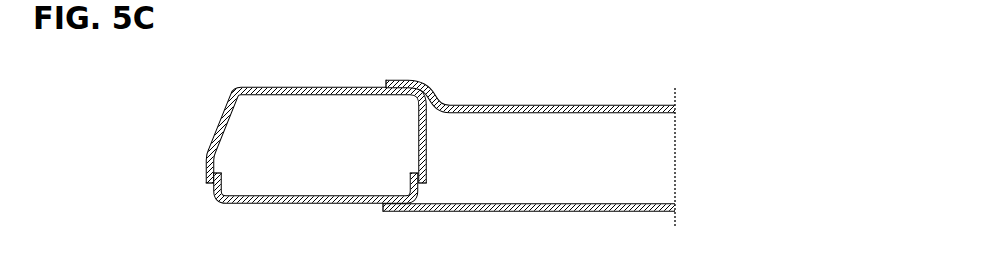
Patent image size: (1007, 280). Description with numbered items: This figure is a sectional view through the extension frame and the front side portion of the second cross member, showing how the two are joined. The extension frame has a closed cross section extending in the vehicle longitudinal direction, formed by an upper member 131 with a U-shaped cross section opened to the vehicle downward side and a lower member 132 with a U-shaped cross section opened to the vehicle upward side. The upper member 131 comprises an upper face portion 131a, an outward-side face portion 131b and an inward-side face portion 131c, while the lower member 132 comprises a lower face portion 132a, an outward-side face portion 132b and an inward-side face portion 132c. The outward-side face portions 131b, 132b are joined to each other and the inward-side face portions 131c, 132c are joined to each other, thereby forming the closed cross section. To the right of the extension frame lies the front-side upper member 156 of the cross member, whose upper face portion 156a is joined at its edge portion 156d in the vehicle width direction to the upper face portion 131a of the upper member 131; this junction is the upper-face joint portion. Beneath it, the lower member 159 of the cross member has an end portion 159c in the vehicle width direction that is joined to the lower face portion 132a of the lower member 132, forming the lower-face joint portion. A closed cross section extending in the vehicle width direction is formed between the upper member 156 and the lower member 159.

The upper member 131 is at (318, 107).
The upper face portion 131a is at (300, 88).
The outward-side face portion 131b is at (205, 158).
The inward-side face portion 131c is at (427, 150).
The lower member 132 is at (319, 216).
The lower face portion 132a is at (267, 205).
The outward-side face portion 132b is at (212, 192).
The inward-side face portion 132c is at (418, 187).
The upper member 156 is at (530, 69).
The upper face portion 156a is at (550, 105).
The edge portion 156d is at (393, 80).
The lower member 159 is at (525, 236).
The end portion 159c is at (393, 212).